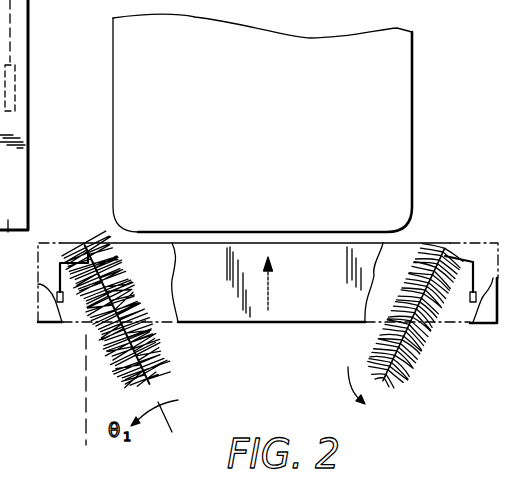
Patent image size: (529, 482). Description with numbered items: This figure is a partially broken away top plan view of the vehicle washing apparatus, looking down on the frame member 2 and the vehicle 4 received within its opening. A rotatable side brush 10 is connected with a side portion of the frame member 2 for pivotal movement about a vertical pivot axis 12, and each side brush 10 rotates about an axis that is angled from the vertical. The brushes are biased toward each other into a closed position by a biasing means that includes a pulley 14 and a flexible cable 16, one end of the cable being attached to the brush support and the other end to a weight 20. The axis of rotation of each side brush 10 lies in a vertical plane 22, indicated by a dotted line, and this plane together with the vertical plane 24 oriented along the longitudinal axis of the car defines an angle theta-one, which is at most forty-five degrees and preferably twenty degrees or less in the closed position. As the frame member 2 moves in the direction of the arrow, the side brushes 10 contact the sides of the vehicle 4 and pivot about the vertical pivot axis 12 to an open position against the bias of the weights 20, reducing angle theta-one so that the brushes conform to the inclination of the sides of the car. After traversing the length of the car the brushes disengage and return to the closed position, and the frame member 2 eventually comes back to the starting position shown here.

The frame member 2 is at (222, 294).
The vehicle 4 is at (234, 151).
The side brush 10 is at (167, 353).
The vertical pivot axis 12 is at (100, 216).
The pulley 14 is at (38, 284).
The flexible cable 16 is at (60, 266).
The weight 20 is at (13, 90).
The vertical plane 22 is at (171, 427).
The vertical plane 24 is at (86, 378).